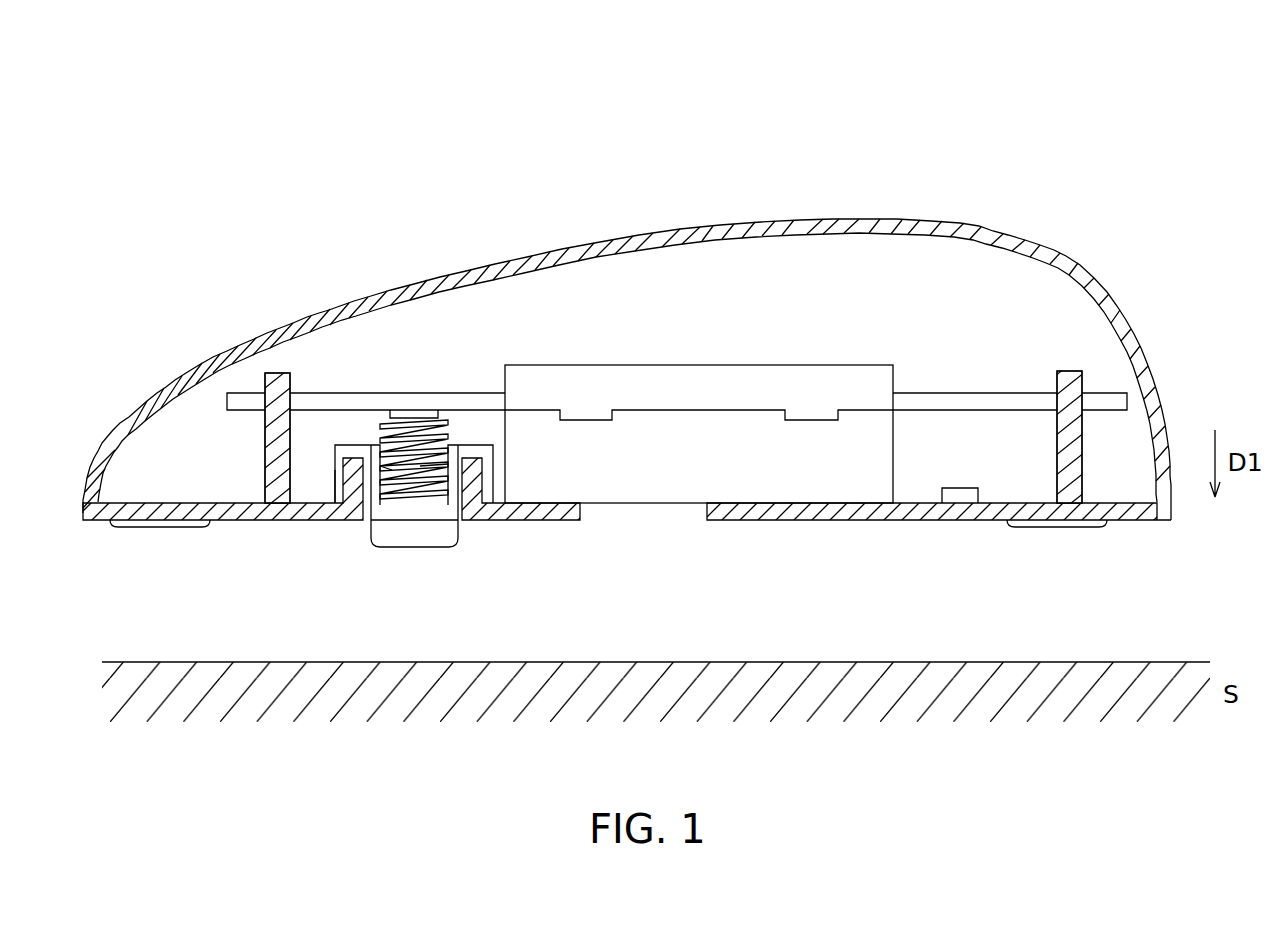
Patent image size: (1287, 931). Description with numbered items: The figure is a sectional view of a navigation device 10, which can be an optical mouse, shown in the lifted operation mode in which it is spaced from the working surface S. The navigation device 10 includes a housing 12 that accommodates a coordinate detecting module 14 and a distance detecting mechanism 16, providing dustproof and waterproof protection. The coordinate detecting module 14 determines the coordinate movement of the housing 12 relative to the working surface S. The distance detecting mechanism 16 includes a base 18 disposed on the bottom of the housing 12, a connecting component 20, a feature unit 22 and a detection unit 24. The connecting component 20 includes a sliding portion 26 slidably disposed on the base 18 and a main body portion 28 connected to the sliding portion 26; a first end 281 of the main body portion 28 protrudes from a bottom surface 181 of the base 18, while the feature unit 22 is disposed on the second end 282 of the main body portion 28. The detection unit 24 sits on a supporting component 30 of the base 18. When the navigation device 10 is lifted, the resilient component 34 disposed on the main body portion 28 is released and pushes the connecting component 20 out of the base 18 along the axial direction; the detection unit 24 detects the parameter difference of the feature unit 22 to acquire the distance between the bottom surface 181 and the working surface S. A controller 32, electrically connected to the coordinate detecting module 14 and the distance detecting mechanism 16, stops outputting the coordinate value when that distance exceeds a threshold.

The navigation device 10 is at (1063, 108).
The housing 12 is at (1133, 522).
The coordinate detecting module 14 is at (707, 474).
The distance detecting mechanism 16 is at (498, 228).
The base 18 is at (318, 505).
The connecting component 20 is at (450, 460).
The feature unit 22 is at (402, 435).
The detection unit 24 is at (413, 415).
The sliding portion 26 is at (338, 506).
The main body portion 28 is at (420, 495).
The supporting component 30 is at (977, 397).
The controller 32 is at (960, 503).
The resilient component 34 is at (420, 468).
The bottom surface 181 is at (358, 521).
The first end 281 is at (418, 527).
The second end 282 is at (396, 466).